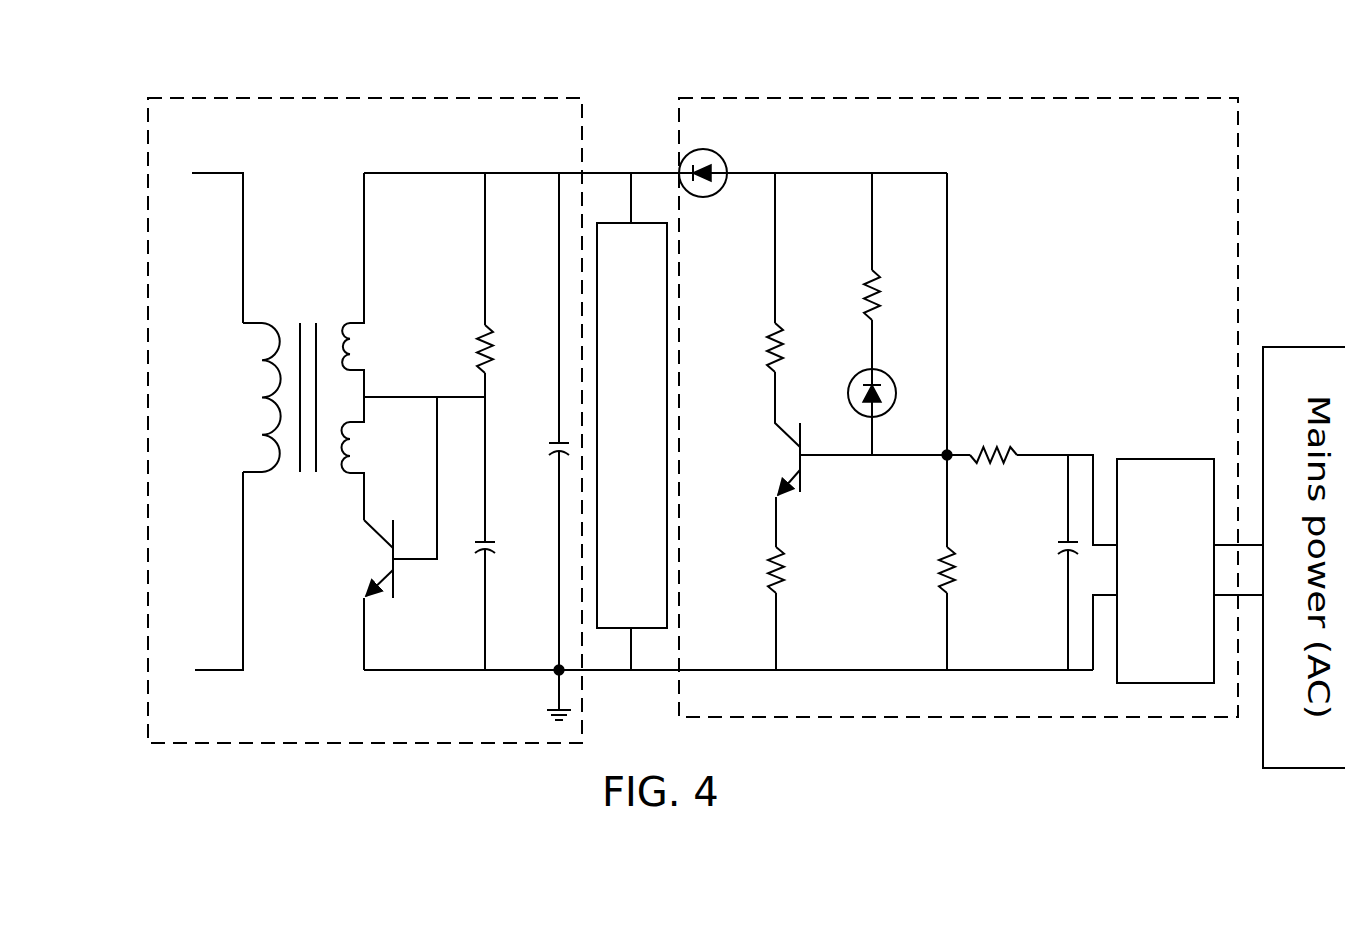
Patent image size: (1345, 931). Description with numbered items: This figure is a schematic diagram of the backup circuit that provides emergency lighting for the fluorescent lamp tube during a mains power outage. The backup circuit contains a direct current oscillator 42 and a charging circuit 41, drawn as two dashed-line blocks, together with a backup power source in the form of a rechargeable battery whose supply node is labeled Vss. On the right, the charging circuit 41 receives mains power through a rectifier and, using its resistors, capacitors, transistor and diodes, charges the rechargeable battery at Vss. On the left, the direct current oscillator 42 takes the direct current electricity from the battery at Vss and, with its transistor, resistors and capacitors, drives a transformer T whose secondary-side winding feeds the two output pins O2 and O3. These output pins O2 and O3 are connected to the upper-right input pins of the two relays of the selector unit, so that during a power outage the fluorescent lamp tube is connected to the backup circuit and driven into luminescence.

The charging circuit 41 is at (910, 112).
The direct current oscillator 42 is at (422, 108).
The rechargeable battery supply node Vss is at (641, 157).
The transformer T is at (303, 346).
The output pin O2 is at (211, 248).
The output pin O3 is at (211, 571).